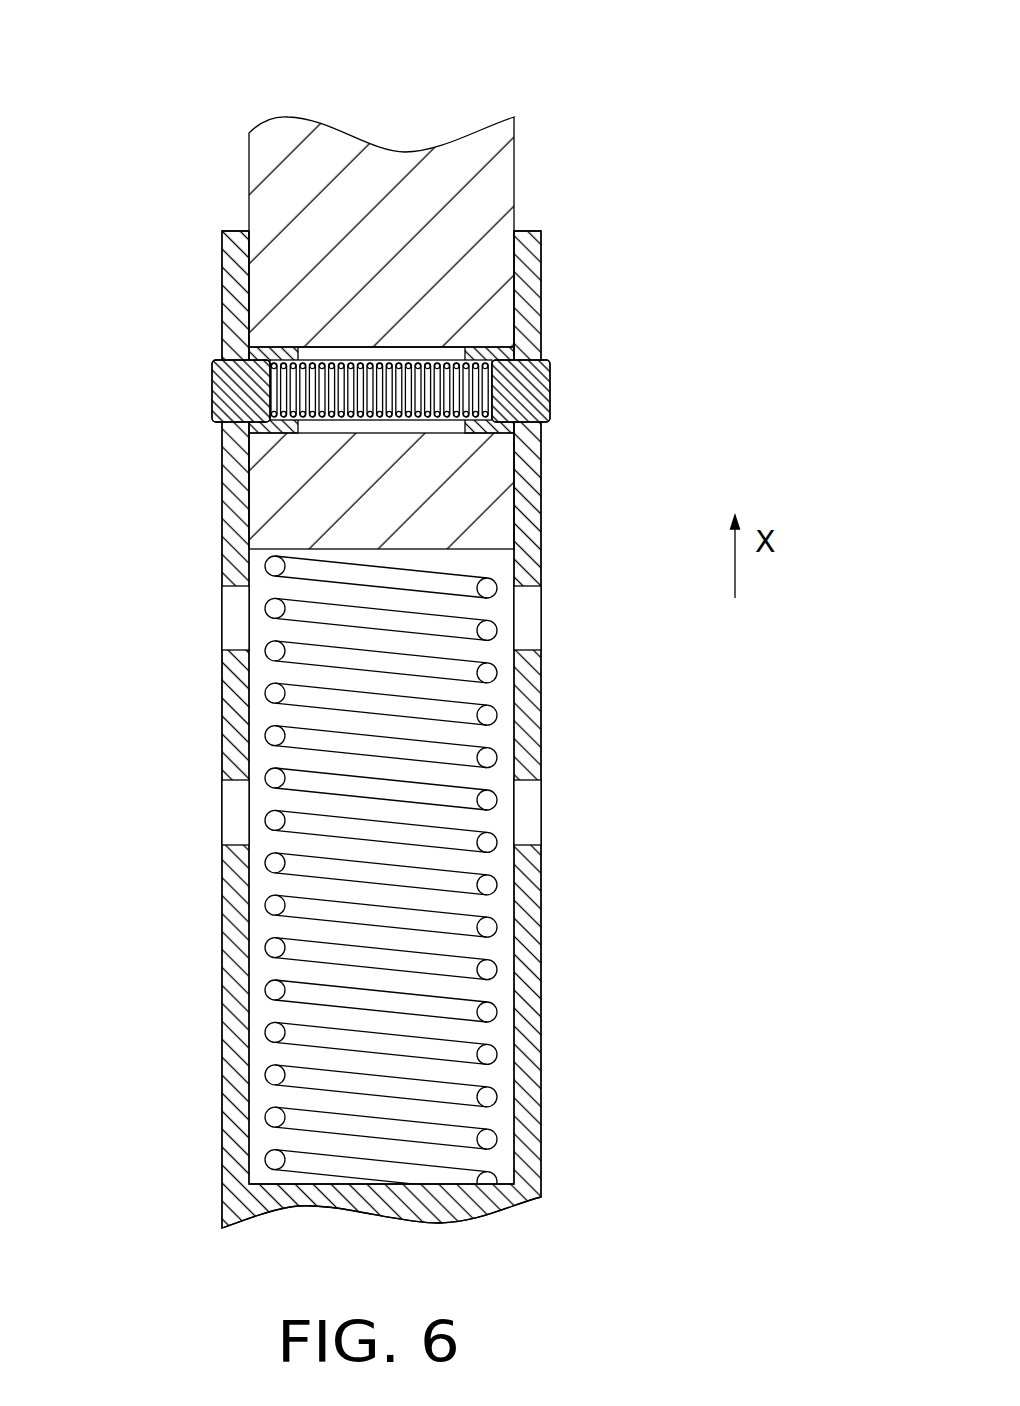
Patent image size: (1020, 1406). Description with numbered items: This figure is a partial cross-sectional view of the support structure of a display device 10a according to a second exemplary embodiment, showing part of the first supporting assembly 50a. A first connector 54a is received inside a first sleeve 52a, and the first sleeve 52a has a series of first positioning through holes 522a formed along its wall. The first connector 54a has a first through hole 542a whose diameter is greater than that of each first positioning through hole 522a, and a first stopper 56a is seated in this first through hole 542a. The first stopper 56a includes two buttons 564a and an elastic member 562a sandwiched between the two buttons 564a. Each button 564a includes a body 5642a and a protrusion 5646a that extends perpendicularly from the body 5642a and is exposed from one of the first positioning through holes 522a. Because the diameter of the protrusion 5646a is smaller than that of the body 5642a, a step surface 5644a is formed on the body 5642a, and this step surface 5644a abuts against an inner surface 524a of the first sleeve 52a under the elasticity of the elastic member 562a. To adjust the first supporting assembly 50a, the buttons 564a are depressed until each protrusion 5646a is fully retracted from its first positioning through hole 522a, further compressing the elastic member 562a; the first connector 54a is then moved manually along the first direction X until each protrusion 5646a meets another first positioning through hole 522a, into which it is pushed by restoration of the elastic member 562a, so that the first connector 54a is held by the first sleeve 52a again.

The display device 10a is at (185, 68).
The first supporting assembly 50a is at (697, 253).
The first sleeve 52a is at (520, 977).
The first positioning through holes 522a is at (532, 423).
The inner surface 524a is at (512, 502).
The first connector 54a is at (503, 182).
The first through hole 542a is at (417, 355).
The first stopper 56a is at (200, 395).
The elastic member 562a is at (363, 362).
The buttons 564a is at (693, 300).
The body 5642a is at (505, 352).
The step surface 5644a is at (502, 349).
The protrusion 5646a is at (535, 393).